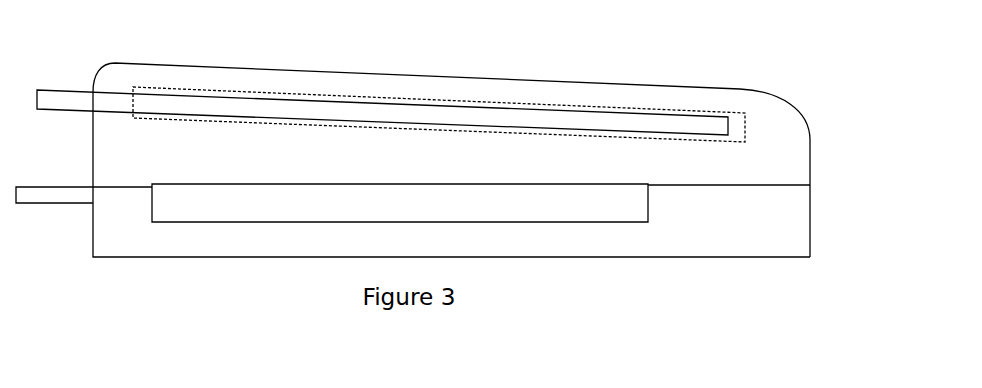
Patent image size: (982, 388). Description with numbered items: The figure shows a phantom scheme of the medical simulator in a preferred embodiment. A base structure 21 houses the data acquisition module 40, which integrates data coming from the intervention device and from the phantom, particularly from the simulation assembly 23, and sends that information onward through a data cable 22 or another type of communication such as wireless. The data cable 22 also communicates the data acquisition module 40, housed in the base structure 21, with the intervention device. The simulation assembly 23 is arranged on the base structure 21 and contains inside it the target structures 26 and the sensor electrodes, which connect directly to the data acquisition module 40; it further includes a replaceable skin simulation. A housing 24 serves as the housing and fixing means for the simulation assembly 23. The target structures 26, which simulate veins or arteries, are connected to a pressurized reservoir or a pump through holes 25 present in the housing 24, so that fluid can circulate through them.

The base structure 21 is at (671, 222).
The data cable 22 is at (47, 198).
The simulation assembly 23 is at (717, 98).
The housing 24 is at (797, 160).
The holes 25 is at (92, 92).
The target structures 26 is at (733, 127).
The data acquisition module 40 is at (310, 212).